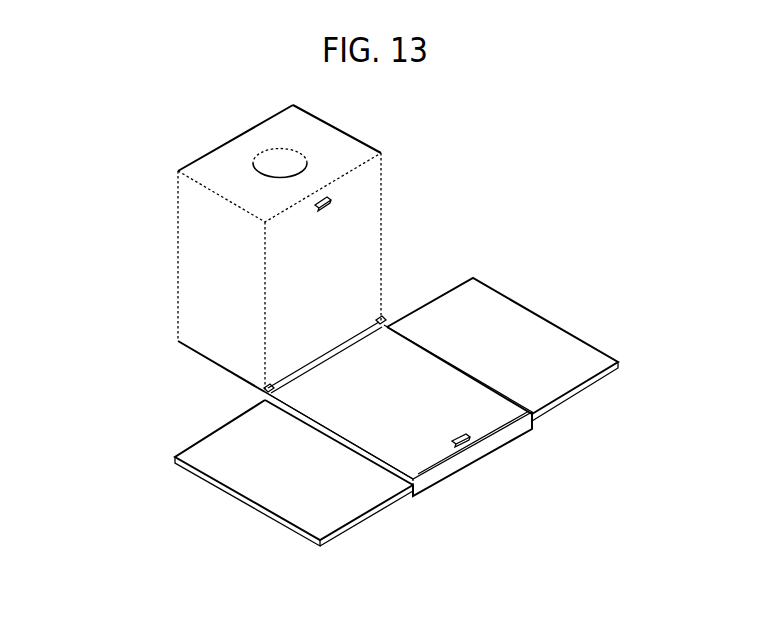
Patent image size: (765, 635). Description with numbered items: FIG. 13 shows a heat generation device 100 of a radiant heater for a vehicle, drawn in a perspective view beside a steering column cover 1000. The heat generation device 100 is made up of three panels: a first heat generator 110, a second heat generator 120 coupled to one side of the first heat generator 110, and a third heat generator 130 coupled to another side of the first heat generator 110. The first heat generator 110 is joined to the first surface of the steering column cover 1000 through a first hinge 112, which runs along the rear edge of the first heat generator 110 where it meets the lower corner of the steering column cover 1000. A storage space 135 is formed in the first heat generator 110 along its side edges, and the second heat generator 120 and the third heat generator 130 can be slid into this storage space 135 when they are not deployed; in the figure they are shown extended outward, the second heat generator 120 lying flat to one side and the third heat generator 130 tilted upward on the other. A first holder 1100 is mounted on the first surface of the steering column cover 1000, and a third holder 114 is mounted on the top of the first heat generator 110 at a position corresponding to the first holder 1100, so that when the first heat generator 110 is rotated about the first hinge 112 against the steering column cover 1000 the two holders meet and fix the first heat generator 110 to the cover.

The steering column cover 1000 is at (196, 250).
The first holder 1100 is at (331, 201).
The heat generation device 100 is at (415, 437).
The first heat generator 110 is at (442, 472).
The first hinge 112 is at (262, 392).
The third holder 114 is at (468, 442).
The second heat generator 120 is at (265, 481).
The third heat generator 130 is at (528, 333).
The storage space 135 is at (480, 378).